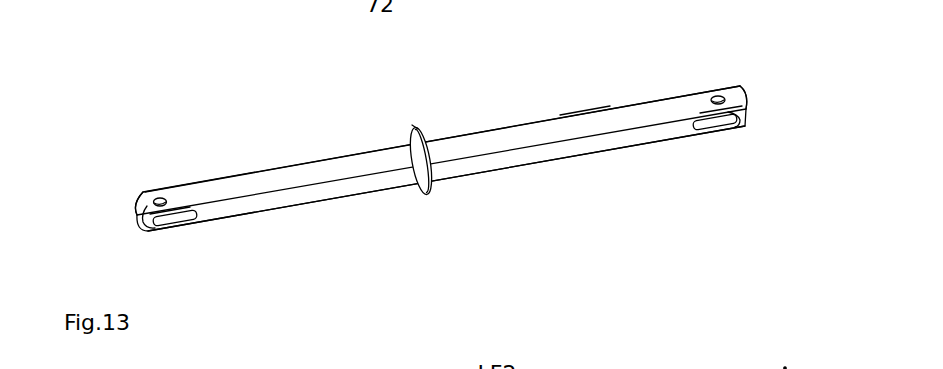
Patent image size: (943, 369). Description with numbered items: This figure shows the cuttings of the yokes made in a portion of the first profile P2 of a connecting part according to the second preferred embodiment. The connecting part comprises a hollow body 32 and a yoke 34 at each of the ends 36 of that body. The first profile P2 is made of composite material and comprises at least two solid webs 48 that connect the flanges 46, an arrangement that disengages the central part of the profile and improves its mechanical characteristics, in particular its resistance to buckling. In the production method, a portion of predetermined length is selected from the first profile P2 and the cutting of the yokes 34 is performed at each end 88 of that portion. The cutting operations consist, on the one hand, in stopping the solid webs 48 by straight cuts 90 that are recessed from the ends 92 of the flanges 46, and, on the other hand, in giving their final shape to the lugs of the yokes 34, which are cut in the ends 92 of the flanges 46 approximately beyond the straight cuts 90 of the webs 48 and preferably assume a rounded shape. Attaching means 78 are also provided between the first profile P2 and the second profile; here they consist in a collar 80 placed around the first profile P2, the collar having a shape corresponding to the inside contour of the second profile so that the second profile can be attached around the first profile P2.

The hollow body 32 is at (475, 142).
The yoke 34 is at (140, 201).
The end of the body 36 is at (203, 242).
The flange 46 is at (280, 185).
The solid web 48 is at (347, 190).
The attaching means 78 is at (412, 119).
The collar 80 is at (423, 197).
The end of the portion 88 is at (165, 177).
The straight cut 90 is at (182, 219).
The end of the flange 92 is at (136, 182).
The first profile P2 is at (588, 124).